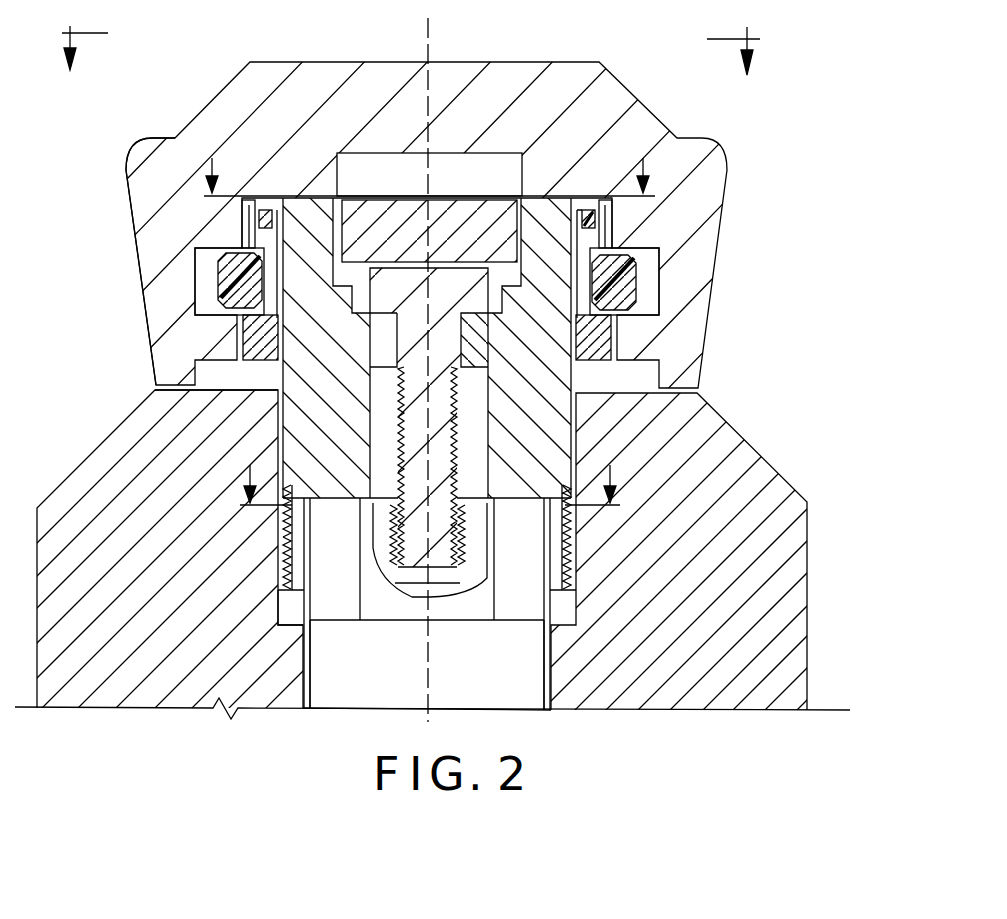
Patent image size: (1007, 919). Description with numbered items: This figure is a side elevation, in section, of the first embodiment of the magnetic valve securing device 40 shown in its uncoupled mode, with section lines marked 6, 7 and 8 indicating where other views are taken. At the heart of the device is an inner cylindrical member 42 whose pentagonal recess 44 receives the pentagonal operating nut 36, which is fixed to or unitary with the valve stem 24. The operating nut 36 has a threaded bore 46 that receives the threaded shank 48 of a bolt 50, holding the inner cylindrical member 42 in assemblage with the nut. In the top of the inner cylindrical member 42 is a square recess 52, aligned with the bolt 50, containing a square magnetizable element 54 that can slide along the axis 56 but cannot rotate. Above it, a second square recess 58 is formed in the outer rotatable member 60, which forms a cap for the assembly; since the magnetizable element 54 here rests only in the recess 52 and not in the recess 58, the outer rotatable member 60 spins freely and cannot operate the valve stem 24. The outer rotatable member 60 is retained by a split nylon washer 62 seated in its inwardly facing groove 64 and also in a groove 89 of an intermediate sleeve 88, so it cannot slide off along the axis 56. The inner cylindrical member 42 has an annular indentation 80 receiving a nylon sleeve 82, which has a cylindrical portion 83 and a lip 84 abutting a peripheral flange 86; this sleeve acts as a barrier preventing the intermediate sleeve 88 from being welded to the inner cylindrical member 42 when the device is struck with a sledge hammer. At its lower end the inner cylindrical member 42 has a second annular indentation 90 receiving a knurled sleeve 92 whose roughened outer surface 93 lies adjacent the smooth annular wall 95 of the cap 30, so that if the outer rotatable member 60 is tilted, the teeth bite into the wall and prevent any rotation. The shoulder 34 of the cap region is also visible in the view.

The valve stem 24 is at (520, 697).
The cap 30 is at (788, 655).
The base top shoulder 34 is at (280, 388).
The operating nut 36 is at (517, 604).
The magnetic valve securing device 40 is at (574, 58).
The inner cylindrical member 42 is at (344, 490).
The recess 44 is at (522, 500).
The threaded bore 46 is at (458, 498).
The threaded shank 48 is at (408, 397).
The bolt 50 is at (387, 325).
The square recess 52 is at (340, 196).
The magnetizable element 54 is at (455, 216).
The axis 56 is at (432, 27).
The second square recess 58 is at (484, 188).
The outer rotatable member 60 is at (124, 218).
The split nylon washer 62 is at (225, 272).
The inwardly facing groove 64 is at (206, 255).
The annular indentation 80 is at (573, 303).
The nylon sleeve 82 is at (576, 232).
The cylindrical portion 83 is at (564, 350).
The lip 84 is at (587, 224).
The peripheral flange 86 is at (586, 216).
The intermediate sleeve 88 is at (600, 220).
The groove 89 is at (606, 316).
The second annular indentation 90 is at (290, 487).
The knurled sleeve 92 is at (282, 560).
The outer surface 93 is at (281, 520).
The smooth annular wall 95 is at (278, 607).
The section line 6- 6 is at (427, 175).
The section line 7- 7 is at (434, 485).
The section line 8- 8 is at (411, 48).